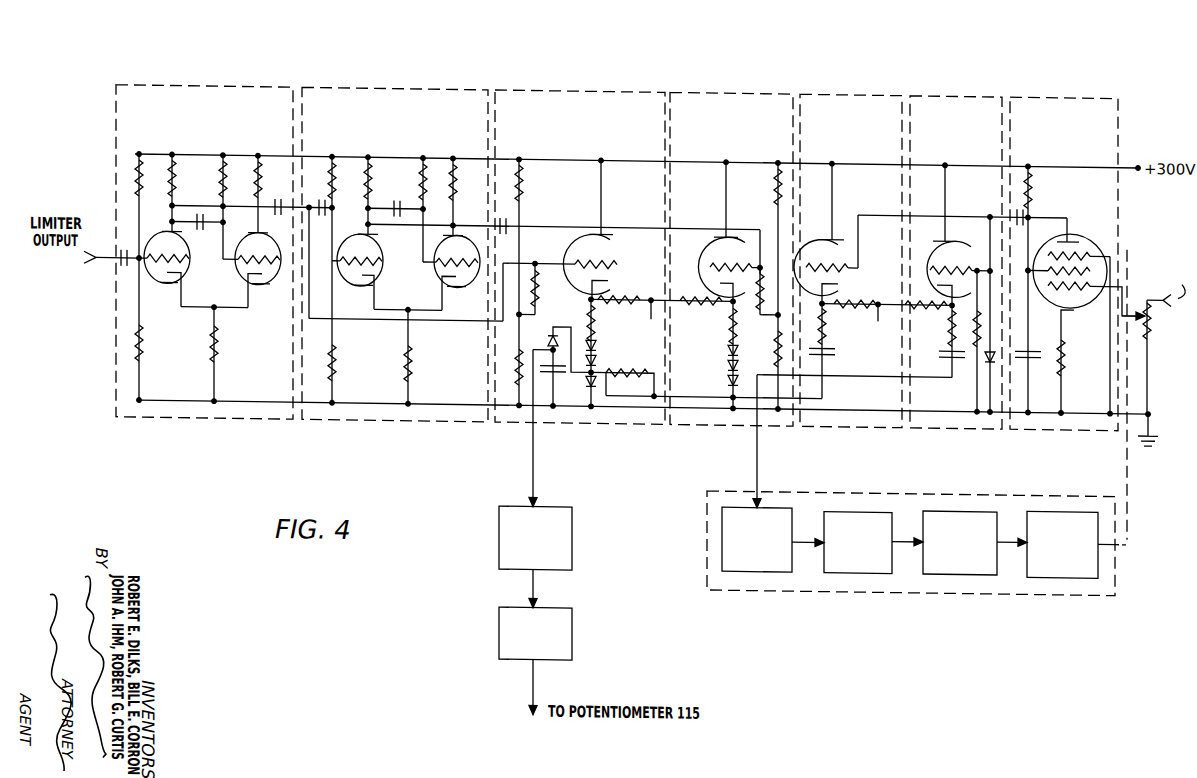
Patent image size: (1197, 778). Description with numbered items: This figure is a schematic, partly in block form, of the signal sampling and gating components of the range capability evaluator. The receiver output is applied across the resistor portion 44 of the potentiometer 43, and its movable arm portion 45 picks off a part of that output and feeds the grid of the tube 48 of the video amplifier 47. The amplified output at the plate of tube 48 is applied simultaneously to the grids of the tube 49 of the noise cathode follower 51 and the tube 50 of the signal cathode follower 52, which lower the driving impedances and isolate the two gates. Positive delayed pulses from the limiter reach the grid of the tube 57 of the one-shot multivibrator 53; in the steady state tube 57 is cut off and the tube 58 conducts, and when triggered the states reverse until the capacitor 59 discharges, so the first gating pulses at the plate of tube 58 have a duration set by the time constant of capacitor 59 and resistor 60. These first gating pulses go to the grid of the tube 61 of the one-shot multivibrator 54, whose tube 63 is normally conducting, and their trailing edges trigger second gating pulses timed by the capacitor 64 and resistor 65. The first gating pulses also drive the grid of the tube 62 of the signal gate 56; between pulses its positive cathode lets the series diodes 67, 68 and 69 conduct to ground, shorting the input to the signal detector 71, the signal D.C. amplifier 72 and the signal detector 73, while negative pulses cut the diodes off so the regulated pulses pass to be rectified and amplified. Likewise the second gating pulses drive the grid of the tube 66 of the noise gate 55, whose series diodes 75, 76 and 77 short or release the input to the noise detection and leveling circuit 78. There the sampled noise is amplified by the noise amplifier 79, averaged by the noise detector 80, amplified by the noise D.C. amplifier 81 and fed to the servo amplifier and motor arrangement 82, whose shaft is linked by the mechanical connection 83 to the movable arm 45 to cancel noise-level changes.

The variable gain control device or potentiometer 43 is at (1132, 286).
The resistor portion 44 is at (1151, 316).
The movable arm portion 45 is at (1133, 305).
The video amplifier 47 is at (1092, 100).
The tube 48 is at (1086, 221).
The tube 49 is at (962, 250).
The tube 50 is at (813, 237).
The noise cathode follower 51 is at (980, 100).
The signal cathode follower 52 is at (880, 100).
The one-shot multivibrator 53 is at (269, 94).
The one-shot multivibrator 54 is at (466, 94).
The noise gate 55 is at (768, 100).
The signal gate 56 is at (640, 100).
The tube 57 is at (153, 284).
The tube 58 is at (270, 284).
The capacitor 59 is at (207, 229).
The resistor 60 is at (221, 179).
The tube 61 is at (350, 285).
The tube 62 is at (568, 247).
The tube 63 is at (466, 285).
The capacitor 64 is at (398, 197).
The resistor 65 is at (420, 192).
The tube 66 is at (740, 236).
The diode 67 is at (599, 330).
The diode 68 is at (597, 356).
The diode 69 is at (588, 378).
The signal detector 71 is at (548, 332).
The signal D.C. amplifier 72 is at (574, 541).
The signal detector 73 is at (575, 617).
The diode 75 is at (726, 342).
The diode 76 is at (726, 357).
The diode 77 is at (726, 372).
The noise detection and leveling circuit 78 is at (707, 518).
The noise amplifier 79 is at (791, 512).
The noise detector 80 is at (890, 512).
The noise D.C. amplifier 81 is at (996, 512).
The servo amplifier and motor arrangement 82 is at (1027, 563).
The mechanical connection 83 is at (1126, 454).